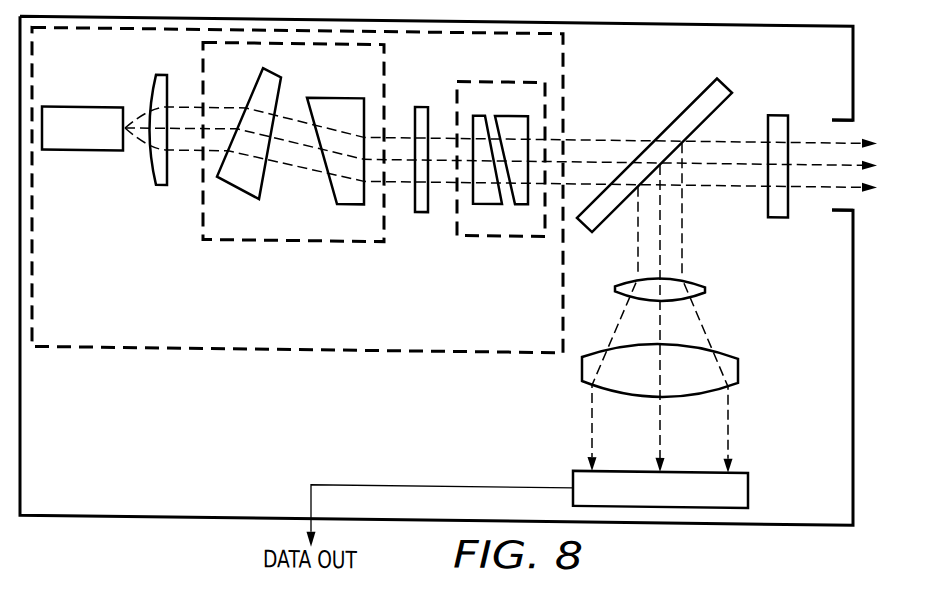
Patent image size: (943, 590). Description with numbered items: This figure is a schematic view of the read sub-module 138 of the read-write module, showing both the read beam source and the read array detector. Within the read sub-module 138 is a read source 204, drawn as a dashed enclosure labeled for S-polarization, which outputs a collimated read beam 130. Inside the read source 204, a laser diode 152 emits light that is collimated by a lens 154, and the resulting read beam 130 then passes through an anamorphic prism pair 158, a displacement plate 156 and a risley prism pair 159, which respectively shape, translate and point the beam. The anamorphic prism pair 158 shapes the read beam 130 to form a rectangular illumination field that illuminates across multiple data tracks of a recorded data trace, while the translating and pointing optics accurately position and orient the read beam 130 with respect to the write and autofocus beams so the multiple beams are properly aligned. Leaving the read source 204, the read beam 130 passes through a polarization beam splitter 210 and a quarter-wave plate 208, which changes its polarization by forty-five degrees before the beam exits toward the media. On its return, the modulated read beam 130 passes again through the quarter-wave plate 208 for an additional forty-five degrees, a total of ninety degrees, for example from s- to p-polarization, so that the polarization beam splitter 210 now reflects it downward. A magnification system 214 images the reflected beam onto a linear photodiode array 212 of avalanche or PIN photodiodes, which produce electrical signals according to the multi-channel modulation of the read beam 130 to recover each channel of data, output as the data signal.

The read beam 130 is at (816, 95).
The read sub-module 138 is at (770, 516).
The laser diode 152 is at (80, 149).
The lens 154 is at (157, 183).
The displacement plate 156 is at (420, 207).
The anamorphic prism pair 158 is at (290, 237).
The risley prism pair 159 is at (515, 231).
The read source 204 is at (75, 347).
The quarter-wave plate 208 is at (768, 191).
The polarization beam splitter 210 is at (720, 71).
The linear photodiode array 212 is at (748, 478).
The magnification system 214 is at (737, 324).